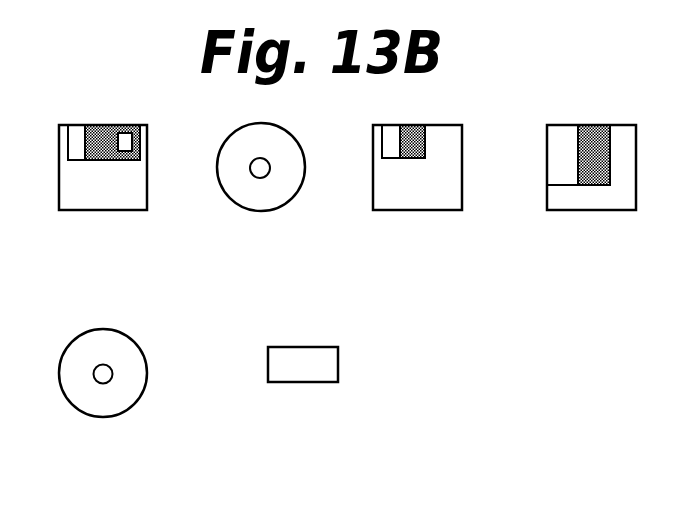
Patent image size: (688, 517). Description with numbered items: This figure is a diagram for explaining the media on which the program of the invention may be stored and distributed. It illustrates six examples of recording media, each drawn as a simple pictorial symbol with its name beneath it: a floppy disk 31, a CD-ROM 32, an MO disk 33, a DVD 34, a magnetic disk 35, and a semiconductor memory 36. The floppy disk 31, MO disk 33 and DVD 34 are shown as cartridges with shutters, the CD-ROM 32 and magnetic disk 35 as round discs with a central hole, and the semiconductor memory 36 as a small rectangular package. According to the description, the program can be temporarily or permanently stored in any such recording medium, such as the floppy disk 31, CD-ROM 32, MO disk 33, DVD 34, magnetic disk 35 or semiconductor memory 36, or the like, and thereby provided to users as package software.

The floppy disk 31 is at (100, 211).
The CD-ROM 32 is at (262, 211).
The MO disk 33 is at (418, 211).
The DVD 34 is at (591, 211).
The magnetic disk 35 is at (103, 418).
The semiconductor memory 36 is at (305, 383).